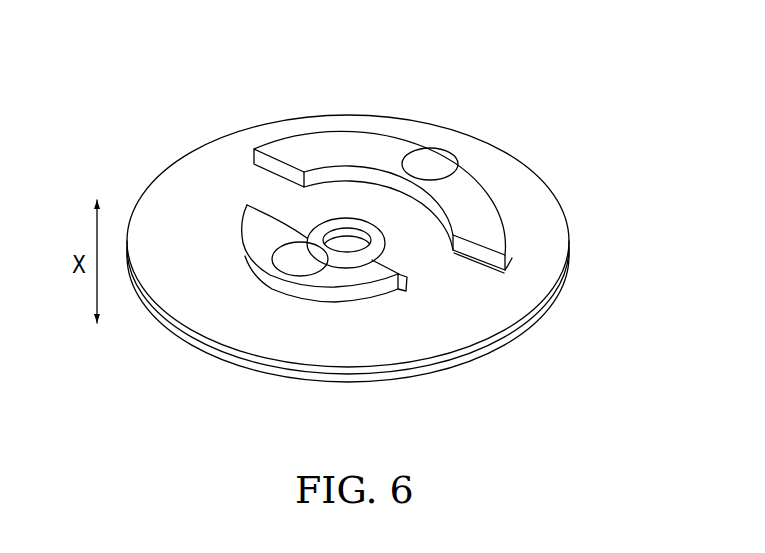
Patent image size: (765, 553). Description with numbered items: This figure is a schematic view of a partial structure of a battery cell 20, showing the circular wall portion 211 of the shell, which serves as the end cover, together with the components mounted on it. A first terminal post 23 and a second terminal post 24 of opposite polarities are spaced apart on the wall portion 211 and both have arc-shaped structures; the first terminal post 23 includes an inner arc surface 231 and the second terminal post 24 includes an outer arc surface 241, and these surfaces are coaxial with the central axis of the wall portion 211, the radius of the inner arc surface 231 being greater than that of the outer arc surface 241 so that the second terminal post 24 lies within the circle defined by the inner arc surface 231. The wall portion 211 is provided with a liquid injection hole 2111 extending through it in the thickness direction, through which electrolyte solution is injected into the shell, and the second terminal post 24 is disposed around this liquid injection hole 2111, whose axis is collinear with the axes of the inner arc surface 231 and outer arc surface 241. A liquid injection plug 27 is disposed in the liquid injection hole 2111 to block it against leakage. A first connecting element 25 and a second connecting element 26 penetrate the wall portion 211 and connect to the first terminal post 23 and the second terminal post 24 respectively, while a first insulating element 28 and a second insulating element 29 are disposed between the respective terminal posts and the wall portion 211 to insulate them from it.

The battery cell 20 is at (348, 191).
The wall portion 211 is at (203, 173).
The liquid injection hole 2111 is at (324, 252).
The second insulating element 29 is at (357, 243).
The first terminal post 23 is at (427, 217).
The inner arc surface 231 is at (373, 162).
The first connecting element 25 is at (437, 164).
The first insulating element 28 is at (497, 272).
The second terminal post 24 is at (315, 321).
The outer arc surface 241 is at (248, 267).
The second connecting element 26 is at (297, 260).
The liquid injection plug 27 is at (404, 286).